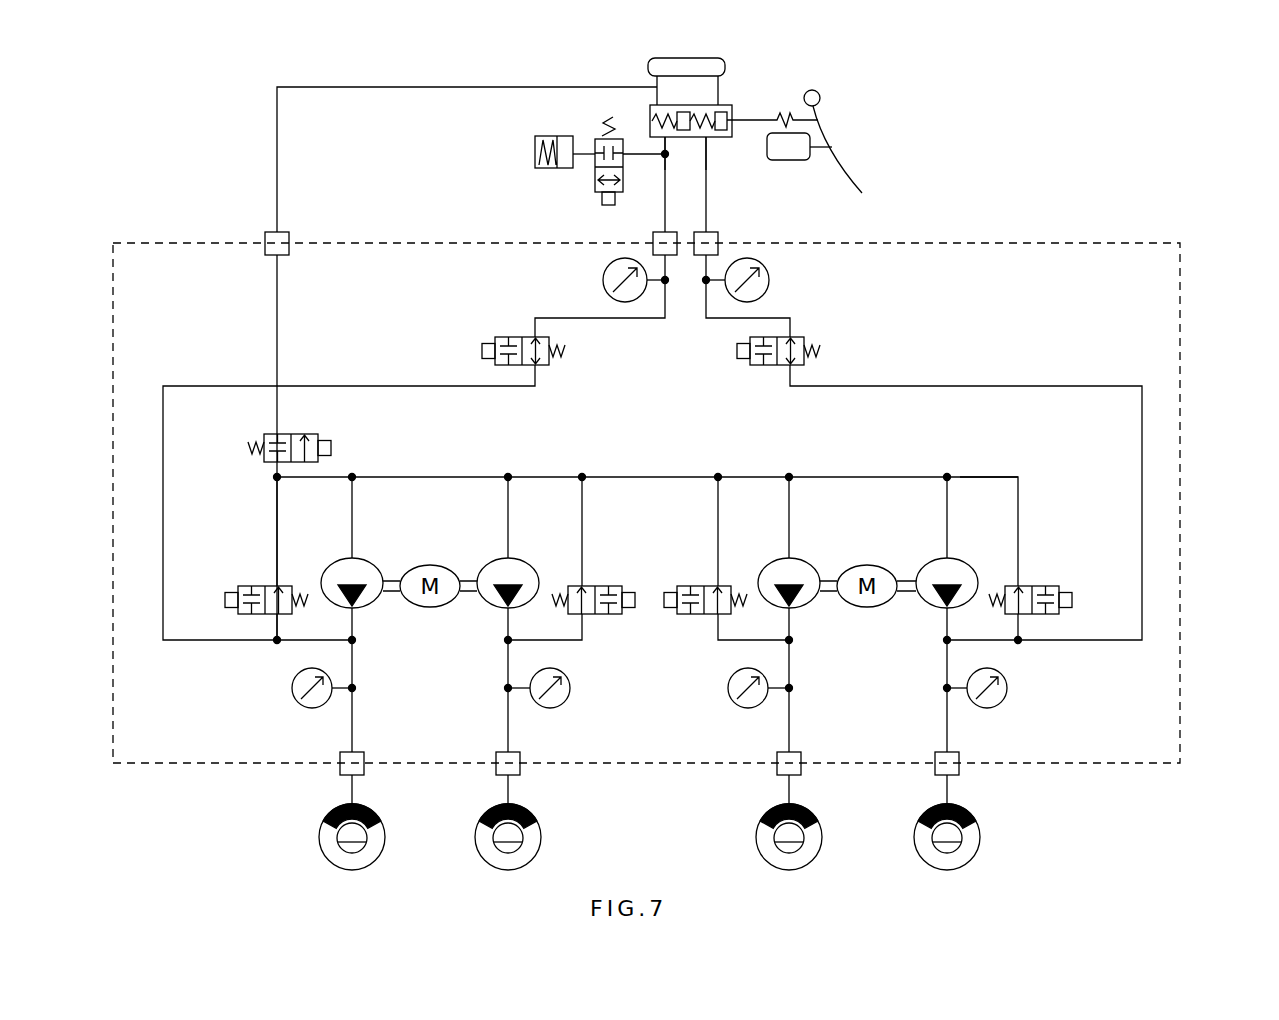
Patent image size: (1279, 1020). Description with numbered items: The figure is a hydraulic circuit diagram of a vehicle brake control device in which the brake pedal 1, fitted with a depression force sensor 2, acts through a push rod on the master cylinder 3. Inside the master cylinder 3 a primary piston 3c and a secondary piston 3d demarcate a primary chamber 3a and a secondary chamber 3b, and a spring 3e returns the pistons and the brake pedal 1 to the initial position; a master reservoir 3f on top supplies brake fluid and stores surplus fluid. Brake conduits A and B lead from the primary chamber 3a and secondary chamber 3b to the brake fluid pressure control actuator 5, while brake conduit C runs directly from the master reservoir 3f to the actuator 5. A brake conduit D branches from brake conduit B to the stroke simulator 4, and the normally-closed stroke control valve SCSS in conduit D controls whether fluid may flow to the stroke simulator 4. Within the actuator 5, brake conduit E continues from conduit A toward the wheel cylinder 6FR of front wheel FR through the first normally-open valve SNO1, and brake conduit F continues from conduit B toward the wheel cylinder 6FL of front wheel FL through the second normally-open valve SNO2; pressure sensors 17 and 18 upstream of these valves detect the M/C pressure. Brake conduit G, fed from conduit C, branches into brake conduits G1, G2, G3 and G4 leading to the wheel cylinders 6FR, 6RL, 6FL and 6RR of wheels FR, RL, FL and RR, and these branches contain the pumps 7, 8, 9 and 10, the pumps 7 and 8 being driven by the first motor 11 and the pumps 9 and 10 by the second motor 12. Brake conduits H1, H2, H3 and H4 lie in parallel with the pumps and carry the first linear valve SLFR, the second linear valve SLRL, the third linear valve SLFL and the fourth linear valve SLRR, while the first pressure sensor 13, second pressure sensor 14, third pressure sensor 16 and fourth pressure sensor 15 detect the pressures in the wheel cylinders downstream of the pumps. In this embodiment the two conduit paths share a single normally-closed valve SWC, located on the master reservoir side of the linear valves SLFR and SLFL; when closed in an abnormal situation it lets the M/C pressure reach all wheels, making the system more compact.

The brake pedal 1 is at (851, 168).
The depression force sensor 2 is at (800, 160).
The master cylinder 3 is at (707, 126).
The primary chamber 3a is at (712, 131).
The secondary chamber 3b is at (667, 132).
The primary piston 3c is at (733, 112).
The secondary piston 3d is at (680, 112).
The spring 3e is at (706, 131).
The master reservoir 3f is at (668, 58).
The stroke simulator 4 is at (535, 152).
The brake fluid pressure control actuator 5 is at (1182, 258).
The wheel cylinder 6FL is at (375, 812).
The wheel cylinder 6RR is at (532, 812).
The wheel cylinder 6RL is at (812, 812).
The wheel cylinder 6FR is at (970, 812).
The pump 7 is at (928, 608).
The pump 8 is at (806, 608).
The pump 9 is at (370, 608).
The pump 10 is at (490, 608).
The first motor 11 is at (867, 607).
The second motor 12 is at (430, 607).
The first pressure sensor 13 is at (997, 708).
The second pressure sensor 14 is at (747, 708).
The fourth pressure sensor 15 is at (556, 708).
The third pressure sensor 16 is at (307, 708).
The pressure sensor 17 is at (769, 280).
The pressure sensor 18 is at (603, 280).
The brake conduit A is at (718, 238).
The brake conduit B is at (653, 238).
The brake conduit C is at (400, 87).
The brake conduit D is at (643, 158).
The brake conduit E is at (1068, 386).
The brake conduit F is at (343, 386).
The brake conduit G is at (277, 302).
The brake conduit G1 is at (947, 505).
The brake conduit G2 is at (789, 505).
The brake conduit G3 is at (352, 507).
The brake conduit G4 is at (508, 507).
The brake conduit H1 is at (968, 477).
The brake conduit H2 is at (718, 505).
The brake conduit H3 is at (277, 547).
The brake conduit H4 is at (582, 507).
The stroke control valve SCSS is at (596, 191).
The first normally-open valve SNO1 is at (795, 337).
The second normally-open valve SNO2 is at (502, 337).
The normally-closed valve SWC is at (312, 434).
The third linear valve SLFL is at (270, 586).
The fourth linear valve SLRR is at (590, 586).
The second linear valve SLRL is at (690, 586).
The first linear valve SLFR is at (1040, 586).
The front wheel FL is at (386, 840).
The rear wheel RR is at (542, 840).
The rear wheel RL is at (823, 840).
The front wheel FR is at (981, 840).